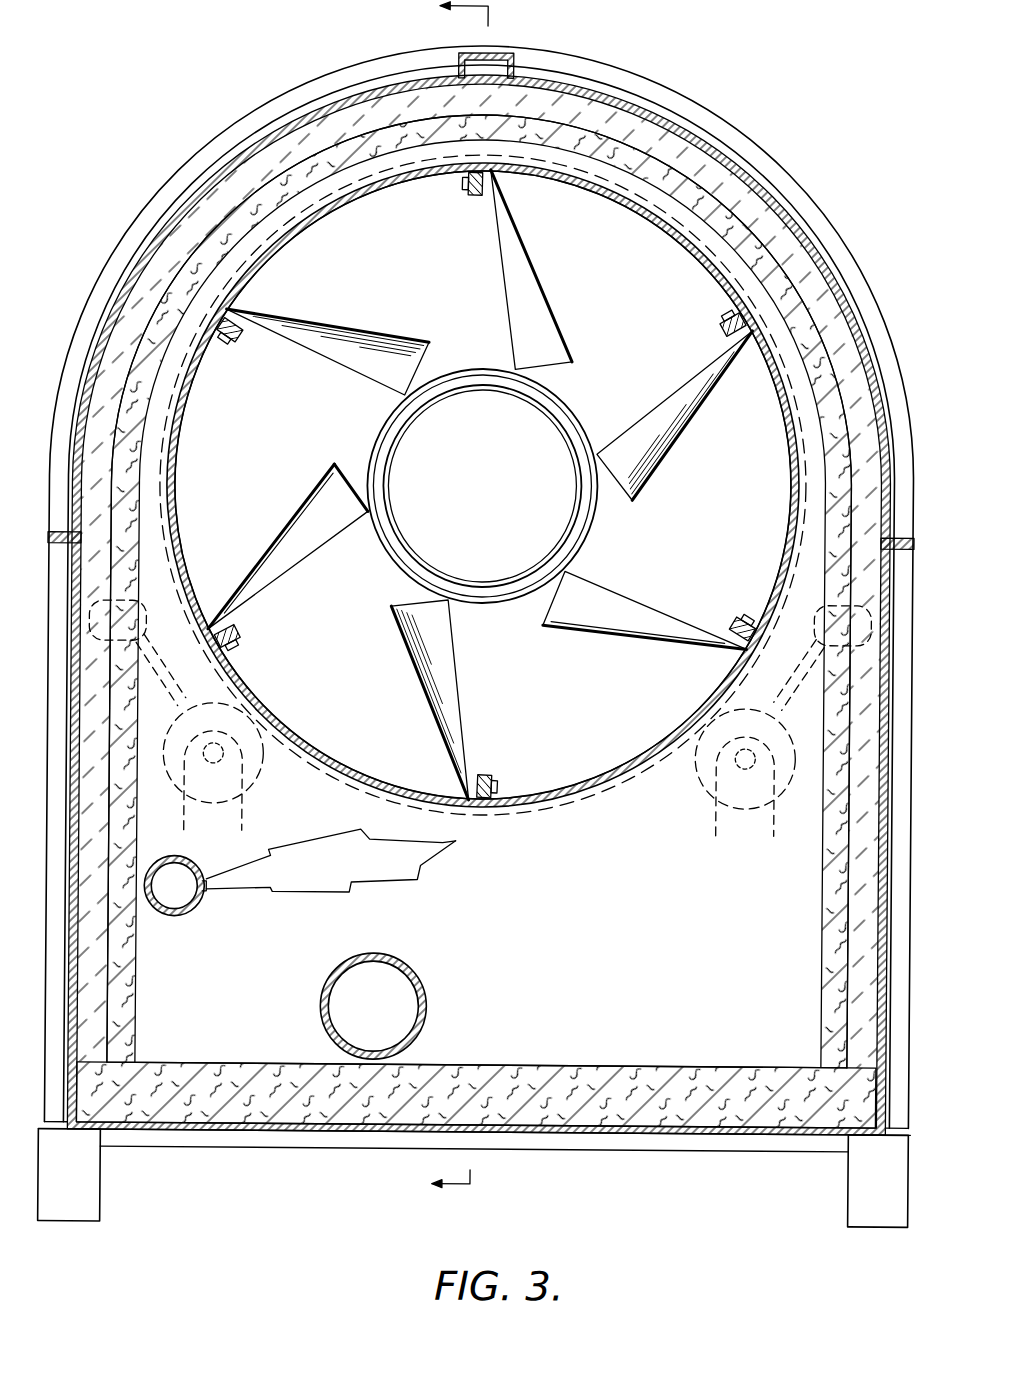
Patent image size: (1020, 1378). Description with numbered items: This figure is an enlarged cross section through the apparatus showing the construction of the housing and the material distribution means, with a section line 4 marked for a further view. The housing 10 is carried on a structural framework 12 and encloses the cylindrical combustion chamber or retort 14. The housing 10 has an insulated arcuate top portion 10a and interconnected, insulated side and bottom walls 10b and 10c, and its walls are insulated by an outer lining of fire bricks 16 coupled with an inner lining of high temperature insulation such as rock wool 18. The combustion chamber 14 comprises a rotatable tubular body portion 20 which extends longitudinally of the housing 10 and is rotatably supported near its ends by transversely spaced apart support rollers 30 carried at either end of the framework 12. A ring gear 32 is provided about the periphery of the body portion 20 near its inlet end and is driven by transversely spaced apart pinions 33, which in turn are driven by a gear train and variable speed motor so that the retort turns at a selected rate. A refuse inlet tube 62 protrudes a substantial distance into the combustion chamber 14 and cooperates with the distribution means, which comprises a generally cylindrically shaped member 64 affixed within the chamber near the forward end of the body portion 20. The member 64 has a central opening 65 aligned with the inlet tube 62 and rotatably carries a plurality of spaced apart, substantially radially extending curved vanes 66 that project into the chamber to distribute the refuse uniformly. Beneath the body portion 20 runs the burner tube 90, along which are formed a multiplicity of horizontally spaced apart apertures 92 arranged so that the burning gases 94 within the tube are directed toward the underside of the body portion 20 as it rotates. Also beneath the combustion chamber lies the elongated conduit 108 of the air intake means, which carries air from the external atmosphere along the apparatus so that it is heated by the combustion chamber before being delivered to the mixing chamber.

The section line 4- 4 is at (476, 605).
The housing 10 is at (847, 297).
The insulated arcuate top portion 10a is at (623, 122).
The insulated side walls 10b is at (100, 800).
The insulated bottom wall 10c is at (673, 1112).
The structural framework 12 is at (862, 1192).
The cylindrical combustion chamber or retort 14 is at (683, 243).
The fire bricks 16 is at (777, 230).
The rock wool 18 is at (777, 267).
The rotatable tubular body portion 20 is at (593, 790).
The support rollers 30 is at (250, 777).
The ring gear 32 is at (185, 602).
The pinions 33 is at (160, 592).
The refuse inlet tube 62 is at (568, 523).
The cylindrically shaped member 64 is at (632, 198).
The central opening 65 is at (450, 380).
The curved vanes 66 is at (555, 348).
The burner tube 90 is at (183, 918).
The apertures 92 is at (209, 893).
The burning gases 94 is at (387, 860).
The elongated conduit 108 is at (431, 1012).